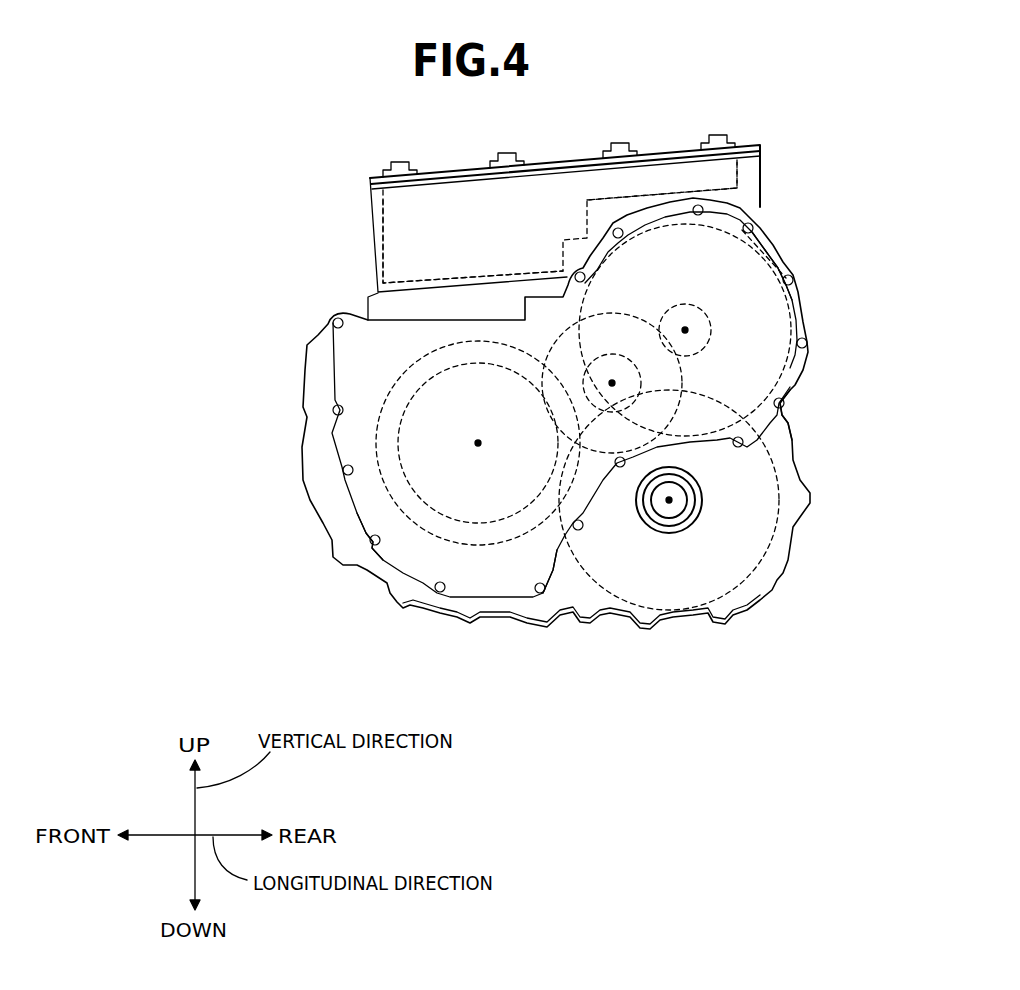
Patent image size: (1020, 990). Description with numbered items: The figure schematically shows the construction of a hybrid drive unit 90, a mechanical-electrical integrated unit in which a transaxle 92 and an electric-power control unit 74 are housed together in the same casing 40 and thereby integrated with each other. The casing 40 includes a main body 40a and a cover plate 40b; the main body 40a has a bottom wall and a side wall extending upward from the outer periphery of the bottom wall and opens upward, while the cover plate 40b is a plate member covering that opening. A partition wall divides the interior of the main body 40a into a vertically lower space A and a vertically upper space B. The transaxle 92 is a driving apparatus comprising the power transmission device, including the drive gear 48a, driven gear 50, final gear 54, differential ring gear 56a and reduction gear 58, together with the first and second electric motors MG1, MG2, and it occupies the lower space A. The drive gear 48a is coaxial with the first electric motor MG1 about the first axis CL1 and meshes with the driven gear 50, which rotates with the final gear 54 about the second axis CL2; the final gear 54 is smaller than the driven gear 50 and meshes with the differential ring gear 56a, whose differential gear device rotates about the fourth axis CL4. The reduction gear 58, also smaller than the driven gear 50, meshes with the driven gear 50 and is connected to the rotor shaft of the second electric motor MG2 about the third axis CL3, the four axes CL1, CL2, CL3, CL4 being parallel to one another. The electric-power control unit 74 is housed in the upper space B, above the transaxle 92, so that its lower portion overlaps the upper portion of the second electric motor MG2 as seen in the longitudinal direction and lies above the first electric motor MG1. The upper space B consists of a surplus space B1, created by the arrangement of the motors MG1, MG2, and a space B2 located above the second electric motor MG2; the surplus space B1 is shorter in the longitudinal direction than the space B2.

The casing 40 is at (490, 631).
The main body 40a is at (405, 597).
The cover plate 40b is at (745, 145).
The vertically upper space B is at (742, 185).
The surplus space B1 is at (482, 271).
The space B2 is at (642, 196).
The electric-power control unit 74 is at (410, 225).
The hybrid drive unit 90 is at (181, 252).
The transaxle 92 is at (232, 382).
The driven gear 50 is at (556, 360).
The final gear 54 is at (648, 397).
The drive gear 48a is at (378, 543).
The differential ring gear 56a is at (793, 428).
The reduction gear 58 is at (745, 300).
The first electric motor MG1 is at (378, 474).
The second electric motor MG2 is at (788, 238).
The first axis CL1 is at (478, 443).
The second axis CL2 is at (612, 383).
The third axis CL3 is at (685, 330).
The fourth axis CL4 is at (669, 500).
The vertically lower space A is at (553, 550).